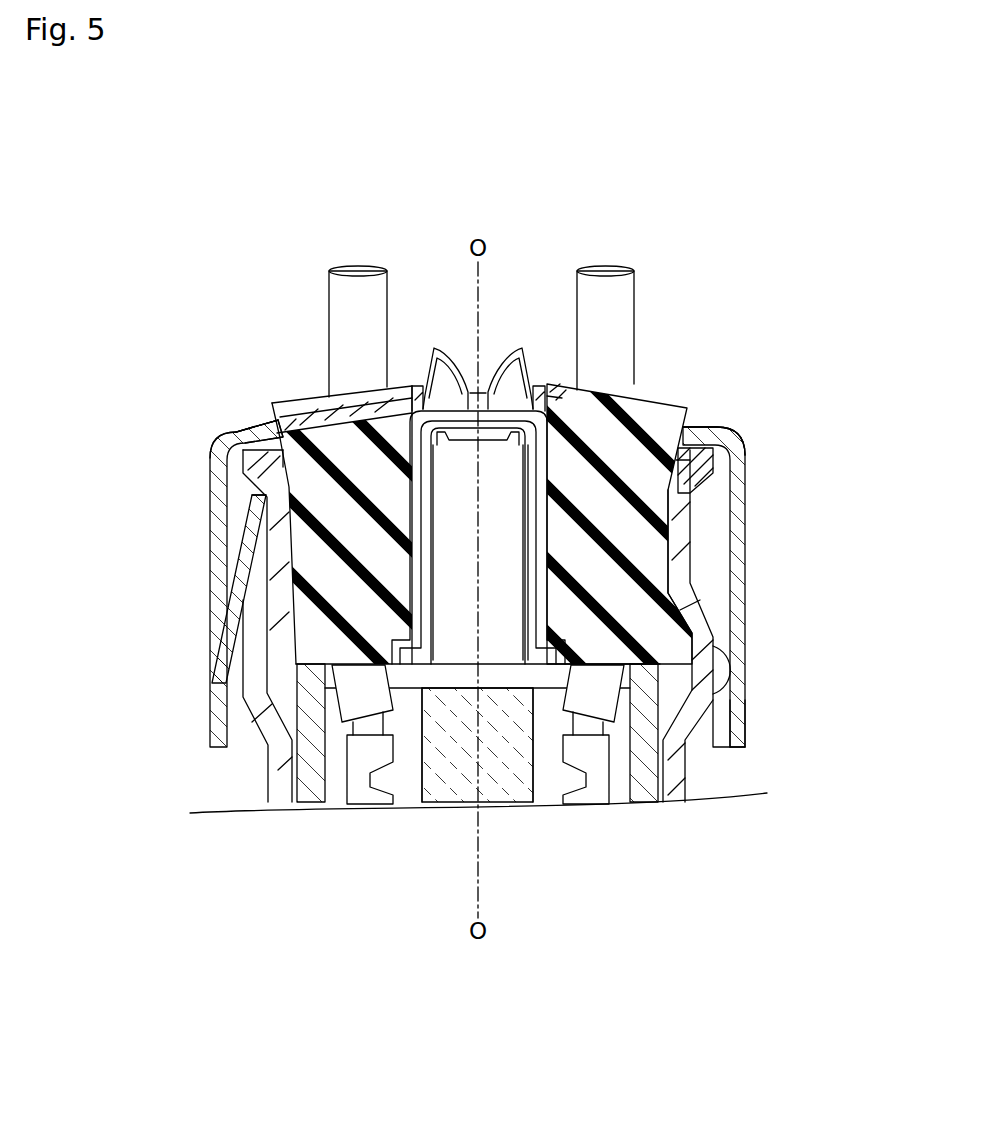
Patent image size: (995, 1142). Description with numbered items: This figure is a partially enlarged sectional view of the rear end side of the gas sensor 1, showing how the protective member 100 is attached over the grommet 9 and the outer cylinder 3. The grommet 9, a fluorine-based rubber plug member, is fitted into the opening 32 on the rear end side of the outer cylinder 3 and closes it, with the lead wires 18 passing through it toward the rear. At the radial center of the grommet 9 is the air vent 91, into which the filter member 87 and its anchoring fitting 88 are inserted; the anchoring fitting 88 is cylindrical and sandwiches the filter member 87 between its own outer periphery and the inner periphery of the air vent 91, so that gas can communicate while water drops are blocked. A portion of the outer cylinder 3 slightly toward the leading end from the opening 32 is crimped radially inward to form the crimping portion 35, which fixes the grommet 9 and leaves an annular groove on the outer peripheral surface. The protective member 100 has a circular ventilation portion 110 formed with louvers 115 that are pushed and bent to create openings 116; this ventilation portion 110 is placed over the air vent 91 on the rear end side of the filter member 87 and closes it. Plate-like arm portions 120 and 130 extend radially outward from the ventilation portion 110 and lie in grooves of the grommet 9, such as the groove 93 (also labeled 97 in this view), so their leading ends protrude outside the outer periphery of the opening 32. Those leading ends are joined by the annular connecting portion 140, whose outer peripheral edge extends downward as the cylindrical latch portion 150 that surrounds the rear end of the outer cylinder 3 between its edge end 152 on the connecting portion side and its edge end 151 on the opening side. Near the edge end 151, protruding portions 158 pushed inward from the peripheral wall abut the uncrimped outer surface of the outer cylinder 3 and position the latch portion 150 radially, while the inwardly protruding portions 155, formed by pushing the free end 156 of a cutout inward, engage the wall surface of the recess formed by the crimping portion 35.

The gas sensor 1 is at (748, 218).
The protective member 100 is at (790, 357).
The arm portion 130 is at (685, 426).
The lead wire 18 is at (360, 300).
The louver 115 is at (454, 375).
The opening 116 is at (437, 404).
The ventilation portion 110 is at (531, 331).
The arm portion 120 is at (323, 422).
The groove 93 is at (258, 433).
The cover flange 97 is at (212, 380).
The connecting portion 140 is at (710, 430).
The edge end 152 is at (758, 468).
The opening 32 is at (688, 470).
The latch portion 150 is at (740, 553).
The crimping portion 35 is at (252, 596).
The protruding portion 158 is at (726, 668).
The edge end 151 is at (760, 738).
The free end 156 is at (240, 517).
The inwardly protruding portion 155 is at (243, 580).
The outer cylinder 3 is at (672, 790).
The grommet 9 is at (343, 640).
The air vent 91 is at (410, 522).
The anchoring fitting 88 is at (525, 557).
The filter member 87 is at (540, 602).